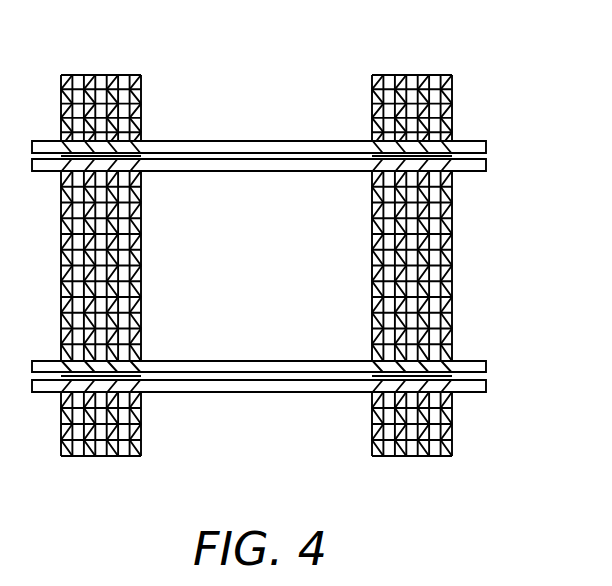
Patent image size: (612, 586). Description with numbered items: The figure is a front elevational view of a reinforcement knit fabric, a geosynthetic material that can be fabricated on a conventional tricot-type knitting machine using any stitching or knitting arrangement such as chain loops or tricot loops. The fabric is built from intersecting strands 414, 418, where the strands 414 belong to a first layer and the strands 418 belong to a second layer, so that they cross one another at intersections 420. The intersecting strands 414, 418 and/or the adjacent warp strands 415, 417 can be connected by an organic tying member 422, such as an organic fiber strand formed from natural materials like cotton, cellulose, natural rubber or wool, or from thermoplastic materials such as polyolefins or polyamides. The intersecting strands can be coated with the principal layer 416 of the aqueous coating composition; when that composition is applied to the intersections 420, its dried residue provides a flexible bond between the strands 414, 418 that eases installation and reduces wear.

The strand 414 is at (400, 75).
The strand 418 is at (446, 75).
The intersection 420 is at (452, 139).
The principal layer 416 is at (43, 363).
The organic tying member 422 is at (456, 364).
The warp strand 415 is at (487, 366).
The warp strand 417 is at (487, 388).